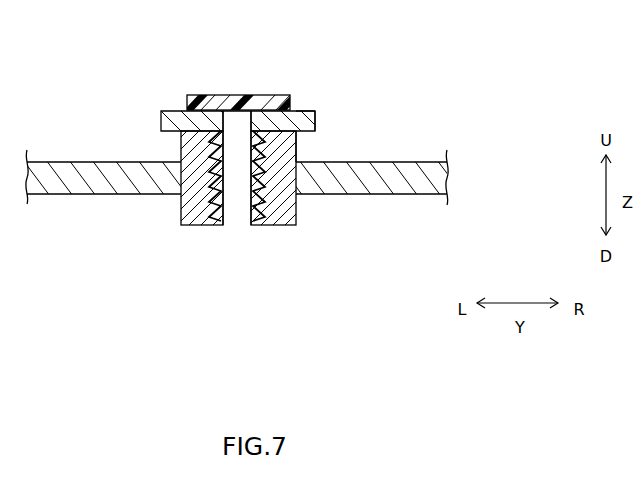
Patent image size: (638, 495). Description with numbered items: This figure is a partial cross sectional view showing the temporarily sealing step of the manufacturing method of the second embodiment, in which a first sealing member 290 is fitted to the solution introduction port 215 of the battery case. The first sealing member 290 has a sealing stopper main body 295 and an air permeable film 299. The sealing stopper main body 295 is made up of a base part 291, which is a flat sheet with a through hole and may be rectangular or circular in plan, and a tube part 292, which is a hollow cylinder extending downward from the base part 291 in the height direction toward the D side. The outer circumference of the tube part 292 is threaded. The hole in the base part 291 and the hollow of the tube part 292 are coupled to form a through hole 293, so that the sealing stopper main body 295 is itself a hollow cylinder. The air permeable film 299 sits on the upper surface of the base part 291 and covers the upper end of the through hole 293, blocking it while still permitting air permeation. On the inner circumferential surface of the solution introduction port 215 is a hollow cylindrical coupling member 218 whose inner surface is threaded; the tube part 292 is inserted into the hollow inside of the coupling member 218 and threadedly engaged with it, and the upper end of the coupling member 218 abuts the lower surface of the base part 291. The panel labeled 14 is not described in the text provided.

The panel (vehicle body member) 14 is at (413, 161).
The first sealing member 290 is at (75, 59).
The air permeable film 299 is at (184, 99).
The sealing stopper main body 295 is at (159, 121).
The base part 291 is at (316, 122).
The solution introduction port 215 is at (305, 157).
The coupling member 218 is at (297, 210).
The tube part 292 is at (258, 212).
The through hole 293 is at (232, 203).